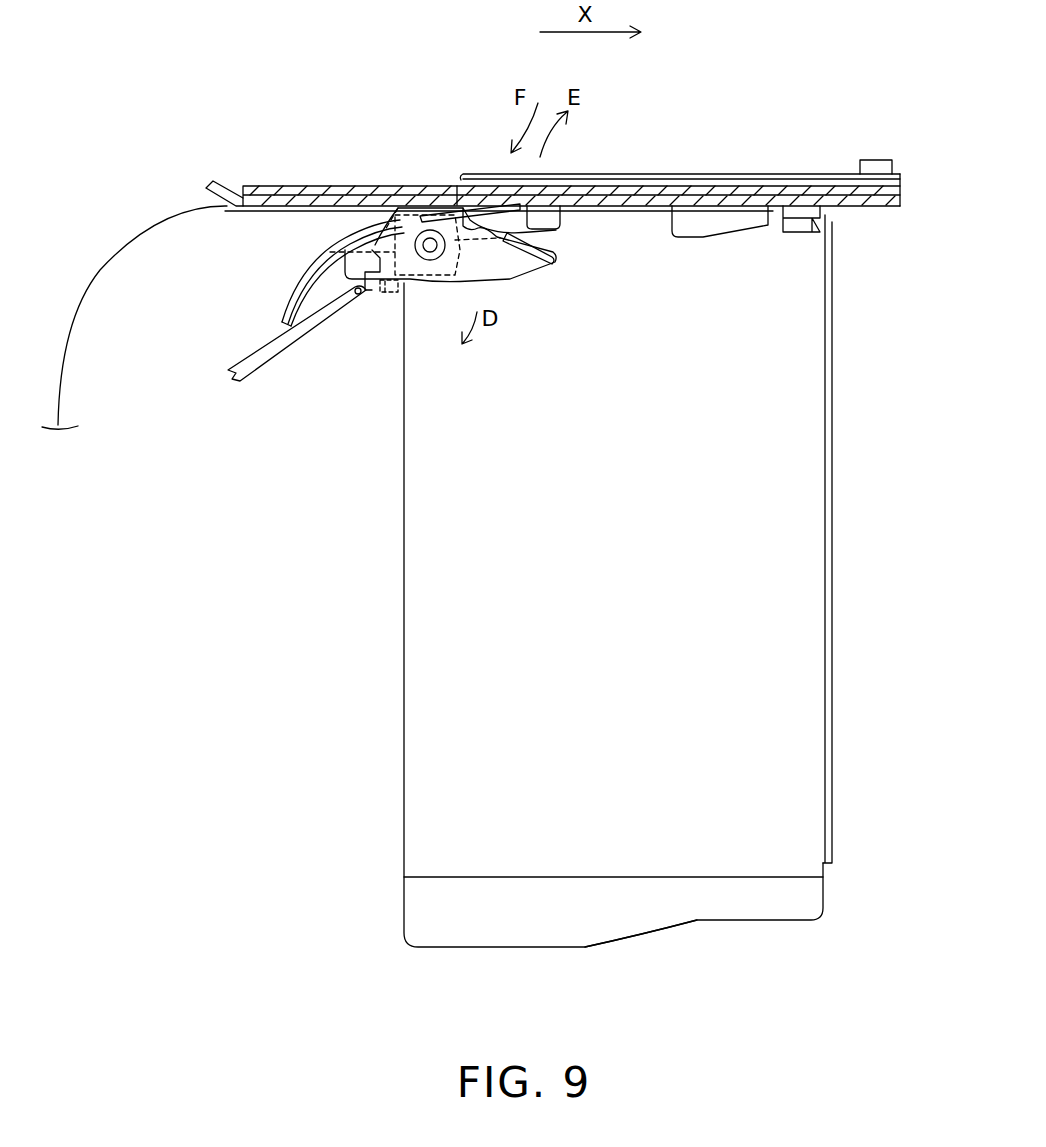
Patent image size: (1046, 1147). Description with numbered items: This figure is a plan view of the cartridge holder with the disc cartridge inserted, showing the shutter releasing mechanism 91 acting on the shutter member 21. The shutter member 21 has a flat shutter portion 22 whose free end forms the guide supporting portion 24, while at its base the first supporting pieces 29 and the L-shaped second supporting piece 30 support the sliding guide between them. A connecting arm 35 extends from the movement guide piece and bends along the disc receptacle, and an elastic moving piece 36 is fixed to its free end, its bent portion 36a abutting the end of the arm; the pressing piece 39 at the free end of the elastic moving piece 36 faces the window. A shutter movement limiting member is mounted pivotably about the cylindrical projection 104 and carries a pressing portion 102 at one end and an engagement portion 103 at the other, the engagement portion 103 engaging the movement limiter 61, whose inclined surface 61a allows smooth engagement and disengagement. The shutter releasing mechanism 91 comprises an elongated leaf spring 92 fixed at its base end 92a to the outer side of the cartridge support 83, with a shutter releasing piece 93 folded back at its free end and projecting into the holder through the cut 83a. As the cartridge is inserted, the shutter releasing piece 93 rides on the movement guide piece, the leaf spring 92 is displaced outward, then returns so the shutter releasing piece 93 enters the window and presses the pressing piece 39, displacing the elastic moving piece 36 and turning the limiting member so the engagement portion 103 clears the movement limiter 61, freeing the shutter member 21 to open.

The shutter member 21 is at (425, 735).
The shutter portion 22 is at (425, 806).
The guide supporting portion 24 is at (552, 935).
The first supporting pieces 29 is at (707, 228).
The second supporting piece 30 is at (792, 233).
The connecting arm 35 is at (313, 262).
The elastic moving piece 36 is at (293, 282).
The bent portion 36a is at (278, 322).
The pressing piece 39 is at (517, 208).
The movement limiter 61 is at (285, 345).
The inclined surface 61a is at (363, 292).
The cartridge support 83 is at (263, 200).
The cut 83a is at (482, 198).
The shutter releasing mechanism 91 is at (718, 172).
The leaf spring 92 is at (653, 173).
The base end 92a is at (822, 172).
The shutter releasing piece 93 is at (570, 190).
The pressing portion 102 is at (560, 261).
The engagement portion 103 is at (390, 288).
The cylindrical projection 104 is at (428, 243).